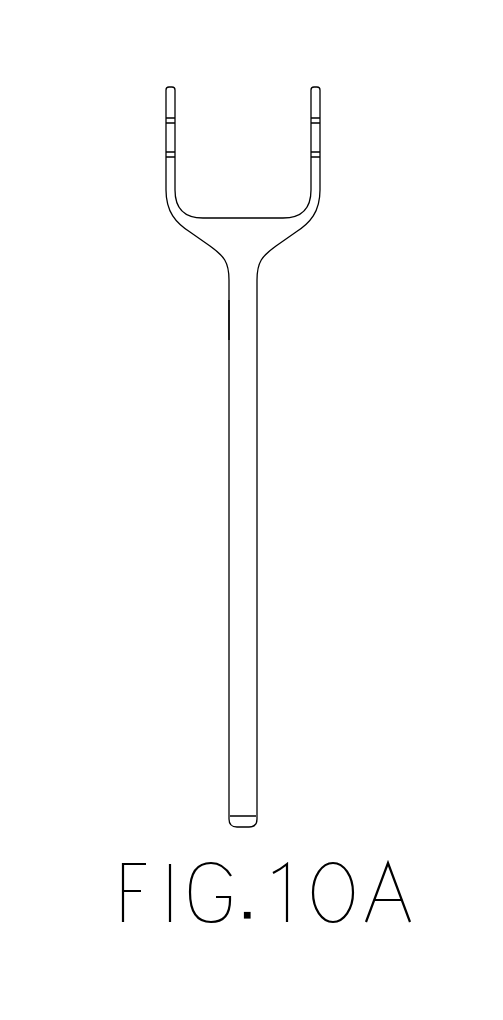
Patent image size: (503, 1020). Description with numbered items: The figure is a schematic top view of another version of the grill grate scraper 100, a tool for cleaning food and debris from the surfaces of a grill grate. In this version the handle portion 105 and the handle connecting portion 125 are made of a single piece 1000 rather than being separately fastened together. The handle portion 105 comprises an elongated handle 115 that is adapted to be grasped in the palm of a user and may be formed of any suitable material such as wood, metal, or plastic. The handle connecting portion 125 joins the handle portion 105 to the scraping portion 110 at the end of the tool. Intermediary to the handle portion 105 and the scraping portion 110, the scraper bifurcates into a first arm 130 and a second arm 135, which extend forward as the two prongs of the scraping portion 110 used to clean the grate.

The grill grate scraper 100 is at (185, 66).
The scraping portion 110 is at (368, 110).
The first arm 130 is at (166, 168).
The second arm 135 is at (320, 170).
The handle connecting portion 125 is at (372, 250).
The handle portion 105 is at (329, 389).
The handle 115 is at (258, 492).
The single piece 1000 is at (200, 340).